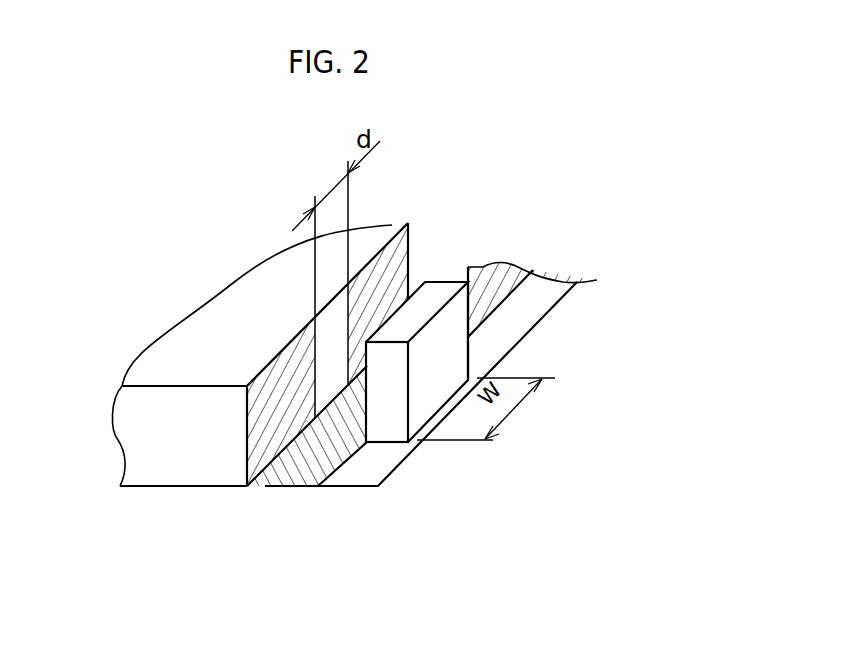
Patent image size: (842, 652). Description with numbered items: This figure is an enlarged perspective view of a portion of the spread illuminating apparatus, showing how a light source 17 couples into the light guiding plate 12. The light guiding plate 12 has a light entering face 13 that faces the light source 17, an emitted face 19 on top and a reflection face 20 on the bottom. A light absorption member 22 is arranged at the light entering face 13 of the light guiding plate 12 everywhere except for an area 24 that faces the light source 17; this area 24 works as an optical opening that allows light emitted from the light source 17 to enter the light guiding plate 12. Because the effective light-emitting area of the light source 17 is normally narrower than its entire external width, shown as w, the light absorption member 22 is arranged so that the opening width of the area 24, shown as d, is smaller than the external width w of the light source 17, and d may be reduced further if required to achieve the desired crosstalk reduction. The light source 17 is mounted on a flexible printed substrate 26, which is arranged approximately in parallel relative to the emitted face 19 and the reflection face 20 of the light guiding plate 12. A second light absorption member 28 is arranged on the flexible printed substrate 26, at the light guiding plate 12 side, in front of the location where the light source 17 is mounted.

The light guiding plate 12 is at (203, 472).
The light entering face 13 is at (399, 268).
The light source 17 is at (447, 268).
The emitted face 19 is at (177, 350).
The reflection face 20 is at (143, 488).
The light absorption member 22 is at (441, 292).
The area 24 is at (328, 345).
The flexible printed substrate 26 is at (355, 470).
The light absorption member 28 is at (302, 470).